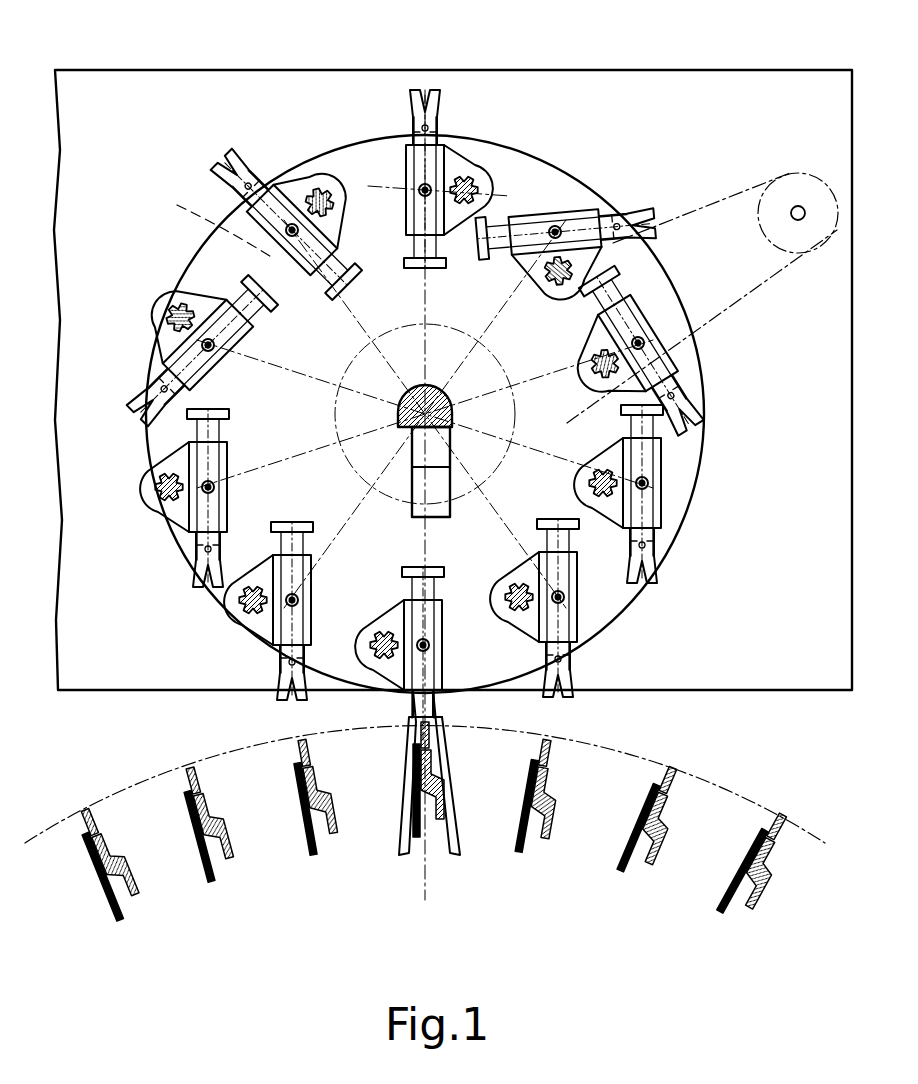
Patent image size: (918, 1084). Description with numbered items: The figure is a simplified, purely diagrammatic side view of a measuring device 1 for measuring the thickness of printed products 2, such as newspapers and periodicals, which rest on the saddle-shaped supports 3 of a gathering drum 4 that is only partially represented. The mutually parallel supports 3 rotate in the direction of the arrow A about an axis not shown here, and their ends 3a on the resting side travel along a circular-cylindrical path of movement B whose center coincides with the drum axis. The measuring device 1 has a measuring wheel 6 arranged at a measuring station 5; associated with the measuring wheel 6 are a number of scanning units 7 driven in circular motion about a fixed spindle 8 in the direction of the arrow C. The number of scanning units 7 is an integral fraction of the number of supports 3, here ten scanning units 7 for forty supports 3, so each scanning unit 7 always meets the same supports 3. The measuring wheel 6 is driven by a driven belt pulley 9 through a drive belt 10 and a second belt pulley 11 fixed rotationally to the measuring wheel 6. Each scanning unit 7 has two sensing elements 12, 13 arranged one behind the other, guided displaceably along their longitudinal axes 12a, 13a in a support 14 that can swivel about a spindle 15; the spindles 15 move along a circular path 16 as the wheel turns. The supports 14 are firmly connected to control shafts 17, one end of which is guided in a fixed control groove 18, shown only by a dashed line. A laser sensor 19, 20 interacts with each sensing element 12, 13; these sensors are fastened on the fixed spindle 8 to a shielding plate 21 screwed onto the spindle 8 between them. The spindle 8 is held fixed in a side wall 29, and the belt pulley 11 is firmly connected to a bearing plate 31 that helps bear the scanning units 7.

The measuring device 1 is at (594, 157).
The printed products 2 is at (465, 840).
The saddle-shaped supports 3 is at (429, 837).
The ends of the supports 3a is at (102, 903).
The gathering drum 4 is at (433, 784).
The measuring station 5 is at (717, 628).
The measuring wheel 6 is at (311, 151).
The scanning units 7 is at (412, 472).
The fixed spindle 8 is at (418, 390).
The driven belt pulley 9 is at (790, 185).
The drive belt 10 is at (687, 213).
The second belt pulley 11 is at (355, 368).
The sensing element 12 is at (412, 472).
The sensing element 13 is at (412, 472).
The longitudinal axis of sensing element 12a is at (412, 472).
The longitudinal axis of sensing element 13a is at (412, 472).
The support (housing) 14 is at (412, 472).
The spindle 15 is at (412, 472).
The circular path 16 is at (208, 224).
The control shafts 17 is at (465, 148).
The control groove 18 is at (497, 205).
The laser sensor 19 is at (480, 447).
The laser sensor 20 is at (447, 452).
The shielding plate 21 is at (420, 488).
The side wall 29 is at (684, 72).
The bearing plate 31 is at (702, 378).
The direction of rotation A is at (335, 880).
The circular-cylindrical path of movement B is at (740, 790).
The direction of circular motion C is at (373, 527).